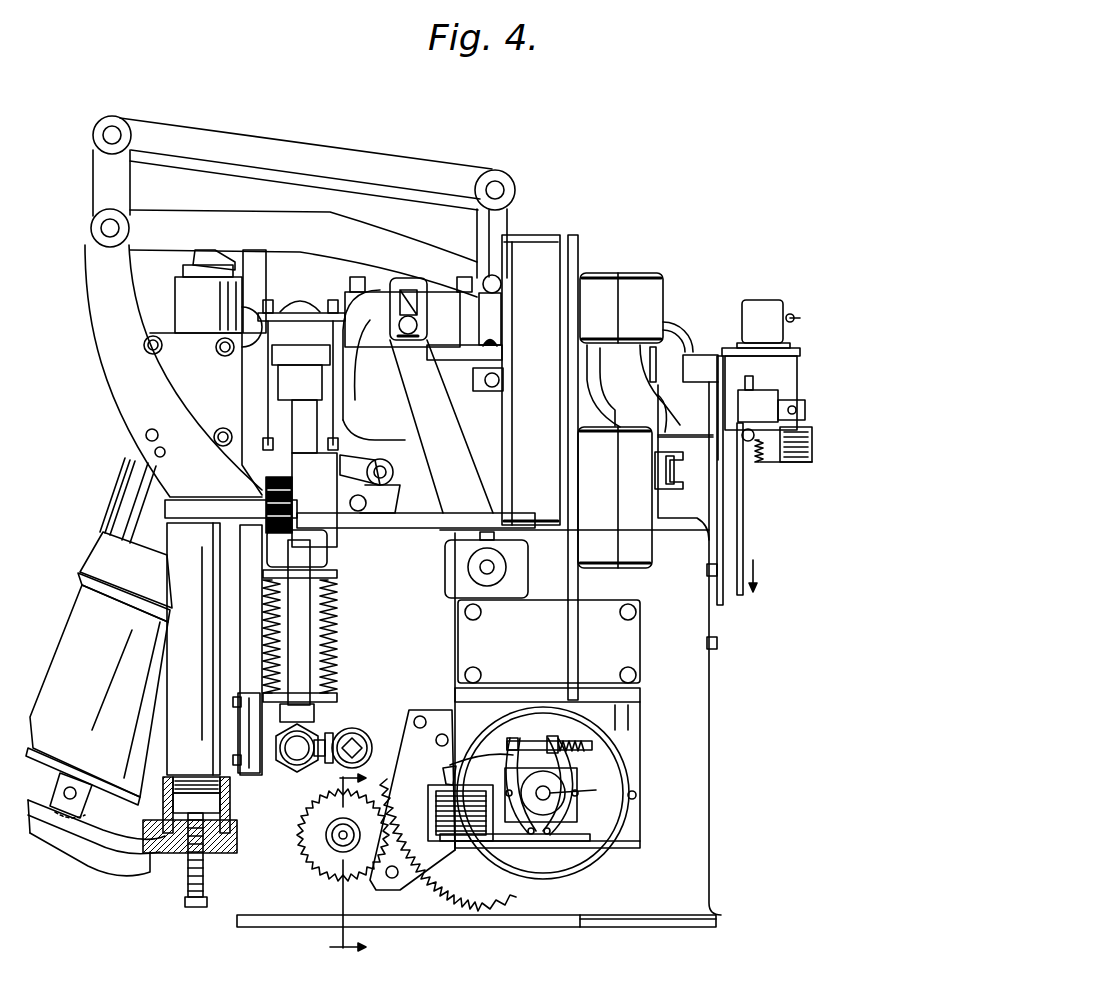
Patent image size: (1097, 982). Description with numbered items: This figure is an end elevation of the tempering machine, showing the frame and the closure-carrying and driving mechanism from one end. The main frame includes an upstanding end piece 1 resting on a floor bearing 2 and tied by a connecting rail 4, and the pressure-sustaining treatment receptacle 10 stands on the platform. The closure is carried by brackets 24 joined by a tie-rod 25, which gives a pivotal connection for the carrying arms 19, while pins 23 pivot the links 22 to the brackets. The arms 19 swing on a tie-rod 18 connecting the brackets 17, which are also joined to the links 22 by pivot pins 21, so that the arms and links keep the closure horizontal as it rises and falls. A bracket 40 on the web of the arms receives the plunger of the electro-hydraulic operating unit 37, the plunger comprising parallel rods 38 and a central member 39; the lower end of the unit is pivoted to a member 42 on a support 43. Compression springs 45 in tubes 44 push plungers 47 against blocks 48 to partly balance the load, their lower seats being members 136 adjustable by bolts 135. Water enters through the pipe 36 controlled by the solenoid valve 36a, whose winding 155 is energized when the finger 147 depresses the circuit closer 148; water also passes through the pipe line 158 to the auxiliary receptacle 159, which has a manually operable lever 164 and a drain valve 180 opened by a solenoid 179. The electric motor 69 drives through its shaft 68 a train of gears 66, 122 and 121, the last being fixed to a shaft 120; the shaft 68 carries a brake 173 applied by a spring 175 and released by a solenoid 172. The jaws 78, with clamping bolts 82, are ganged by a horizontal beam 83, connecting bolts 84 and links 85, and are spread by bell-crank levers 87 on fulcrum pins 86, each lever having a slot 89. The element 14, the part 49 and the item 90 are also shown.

The end piece 1 is at (690, 920).
The floor bearing 2 is at (649, 928).
The connecting rail 4 is at (247, 700).
The treatment receptacle 10 is at (358, 863).
The shelf 14 is at (500, 345).
The bracket 17 is at (125, 376).
The tie-rod 18 is at (118, 222).
The carrying arm 19 is at (263, 222).
The pivot pin 21 is at (113, 128).
The link 22 is at (236, 140).
The pin 23 is at (507, 187).
The bracket 24 is at (509, 218).
The tie-rod 25 is at (502, 284).
The pipe 36 is at (292, 770).
The solenoid valve 36a is at (300, 640).
The electro-hydraulic operating unit 37 is at (99, 668).
The rod 38 is at (118, 490).
The central member 39 is at (128, 455).
The bracket 40 is at (262, 276).
The member 42 is at (84, 808).
The support 43 is at (60, 838).
The tube 44 is at (193, 649).
The compression spring 45 is at (203, 414).
The plunger 47 is at (198, 265).
The block 48 is at (185, 780).
The lever 49 is at (225, 258).
The gear 66 is at (508, 897).
The motor shaft 68 is at (547, 711).
The electric motor 69 is at (580, 862).
The jaw 78 is at (469, 420).
The clamping bolt 82 is at (375, 499).
The horizontal beam 83 is at (672, 462).
The connecting bolt 84 is at (676, 478).
The link 85 is at (380, 458).
The fulcrum pin 86 is at (470, 570).
The bell-crank lever 87 is at (441, 395).
The slot 89 is at (417, 299).
The ball 90 is at (418, 320).
The shaft 120 is at (328, 840).
The gear 121 is at (335, 862).
The gear 122 is at (440, 843).
The bolt 135 is at (190, 898).
The member 136 is at (212, 803).
The finger 147 is at (690, 330).
The circuit closer 148 is at (705, 355).
The winding 155 is at (262, 484).
The pipe line 158 is at (684, 432).
The auxiliary receptacle 159 is at (785, 364).
The manually operable lever 164 is at (798, 314).
The solenoid 172 is at (465, 815).
The brake 173 is at (558, 774).
The spring 175 is at (572, 738).
The solenoid 179 is at (796, 466).
The valve 180 is at (770, 400).